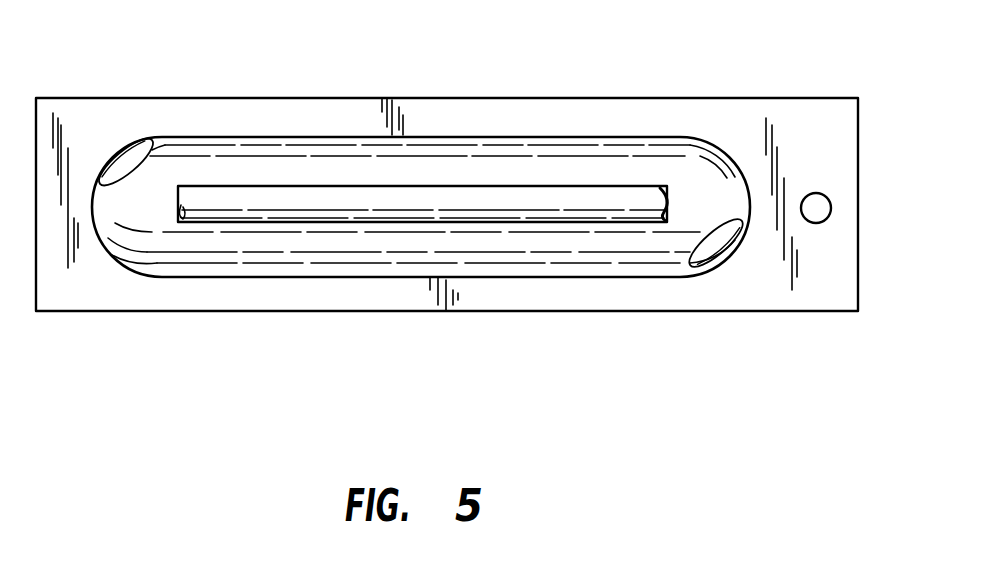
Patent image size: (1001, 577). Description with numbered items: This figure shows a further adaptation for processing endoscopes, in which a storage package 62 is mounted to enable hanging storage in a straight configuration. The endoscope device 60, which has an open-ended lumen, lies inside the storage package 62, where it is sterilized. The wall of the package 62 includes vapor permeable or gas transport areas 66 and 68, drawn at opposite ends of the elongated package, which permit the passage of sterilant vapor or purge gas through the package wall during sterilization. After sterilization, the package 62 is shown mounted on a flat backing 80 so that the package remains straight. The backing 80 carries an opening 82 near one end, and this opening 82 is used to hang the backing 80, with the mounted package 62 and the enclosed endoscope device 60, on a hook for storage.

The endoscope device 60 is at (302, 188).
The storage package 62 is at (223, 137).
The vapor permeable area 66 is at (123, 150).
The vapor permeable area 68 is at (707, 260).
The backing 80 is at (705, 98).
The opening 82 is at (830, 196).